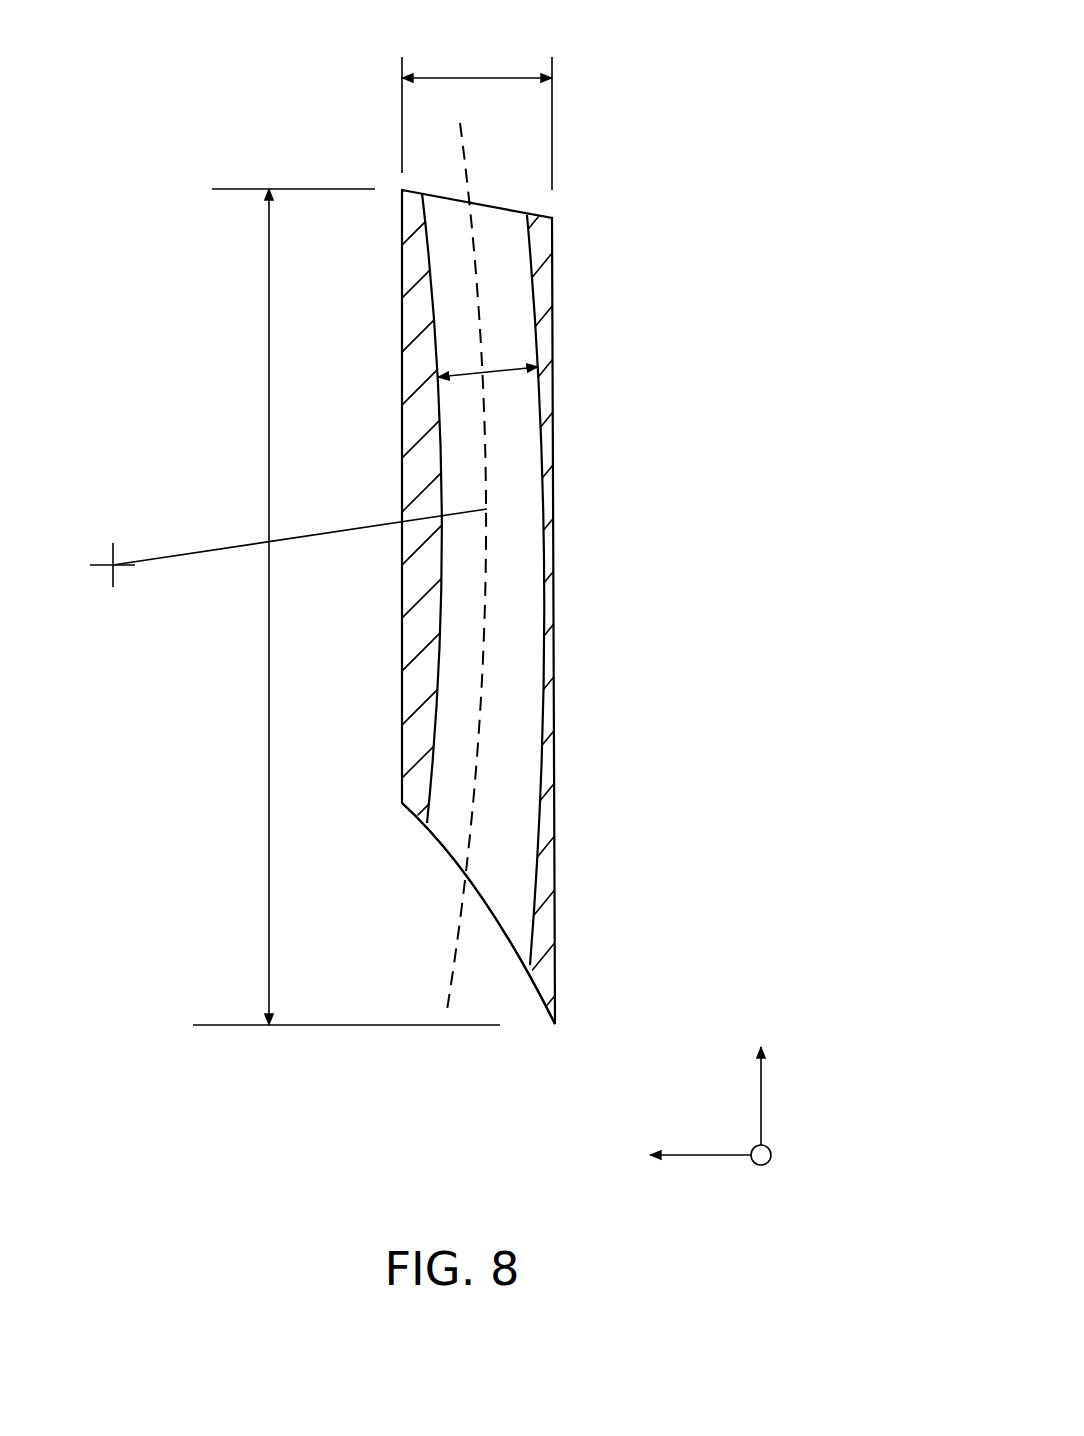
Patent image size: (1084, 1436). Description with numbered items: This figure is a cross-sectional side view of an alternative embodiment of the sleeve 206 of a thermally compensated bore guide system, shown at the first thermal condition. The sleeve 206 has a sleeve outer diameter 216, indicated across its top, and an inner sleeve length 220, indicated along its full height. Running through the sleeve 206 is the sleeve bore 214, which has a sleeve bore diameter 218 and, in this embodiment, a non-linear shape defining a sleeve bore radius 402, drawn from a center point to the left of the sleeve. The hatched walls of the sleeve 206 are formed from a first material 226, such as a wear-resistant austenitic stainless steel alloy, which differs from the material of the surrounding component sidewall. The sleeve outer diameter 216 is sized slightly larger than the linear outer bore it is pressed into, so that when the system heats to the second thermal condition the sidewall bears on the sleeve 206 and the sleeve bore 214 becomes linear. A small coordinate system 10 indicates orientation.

The coordinate system 10 is at (715, 1120).
The sleeve 206 is at (553, 488).
The sleeve bore 214 is at (427, 855).
The sleeve outer diameter 216 is at (477, 78).
The sleeve bore diameter 218 is at (495, 367).
The inner sleeve length 220 is at (269, 393).
The first material 226 is at (537, 272).
The sleeve bore radius 402 is at (155, 557).